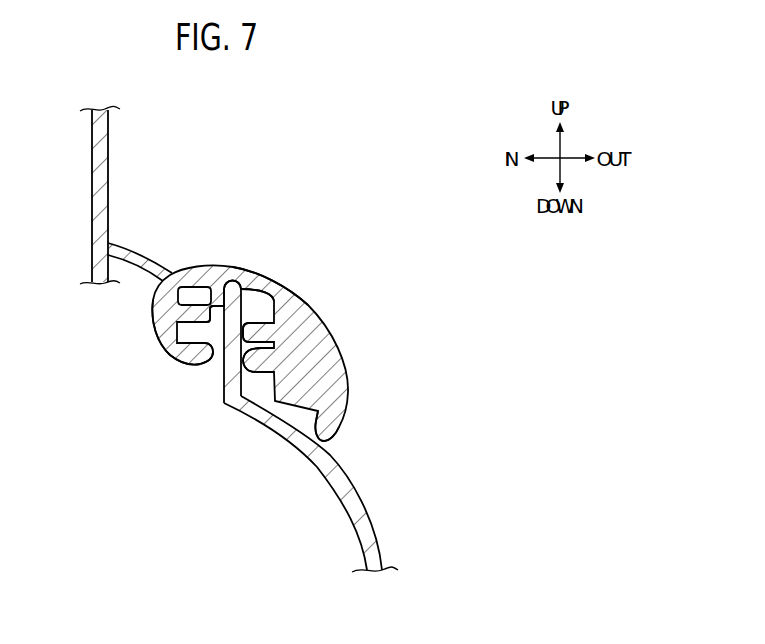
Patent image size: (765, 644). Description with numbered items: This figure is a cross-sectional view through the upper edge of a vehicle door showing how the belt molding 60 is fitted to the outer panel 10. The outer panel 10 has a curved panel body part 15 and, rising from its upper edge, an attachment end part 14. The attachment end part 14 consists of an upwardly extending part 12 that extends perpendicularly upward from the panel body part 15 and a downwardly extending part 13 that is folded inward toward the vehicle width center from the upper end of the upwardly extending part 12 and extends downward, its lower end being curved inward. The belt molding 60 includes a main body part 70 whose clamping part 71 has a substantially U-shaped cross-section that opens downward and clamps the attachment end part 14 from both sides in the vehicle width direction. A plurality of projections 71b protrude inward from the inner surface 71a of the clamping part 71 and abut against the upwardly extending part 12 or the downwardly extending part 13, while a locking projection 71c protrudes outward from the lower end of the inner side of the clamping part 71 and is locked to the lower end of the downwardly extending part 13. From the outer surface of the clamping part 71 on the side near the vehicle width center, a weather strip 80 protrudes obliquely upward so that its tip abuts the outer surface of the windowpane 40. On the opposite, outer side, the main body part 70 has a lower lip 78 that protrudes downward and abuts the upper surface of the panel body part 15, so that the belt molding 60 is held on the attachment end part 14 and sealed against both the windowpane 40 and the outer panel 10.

The outer panel 10 is at (373, 524).
The upwardly extending part 12 is at (224, 392).
The downwardly extending part 13 is at (168, 355).
The attachment end part 14 is at (253, 271).
The panel body part 15 is at (301, 452).
The windowpane 40 is at (110, 150).
The belt molding 60 is at (418, 240).
The main body part 70 is at (196, 265).
The clamping part 71 is at (273, 277).
The inner surface 71a is at (265, 299).
The projections 71b is at (163, 298).
The locking projection 71c is at (204, 365).
The lower lip 78 is at (337, 438).
The weather strip 80 is at (144, 254).